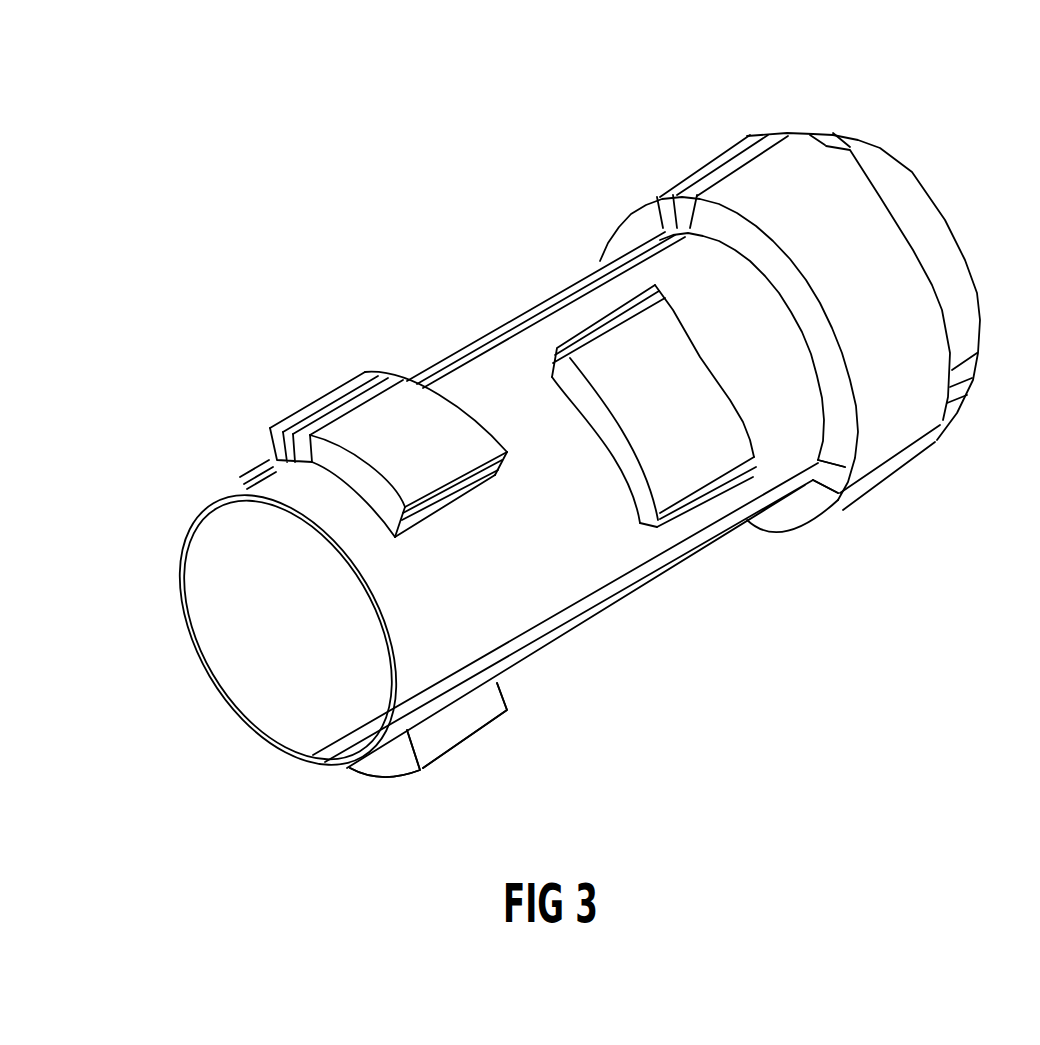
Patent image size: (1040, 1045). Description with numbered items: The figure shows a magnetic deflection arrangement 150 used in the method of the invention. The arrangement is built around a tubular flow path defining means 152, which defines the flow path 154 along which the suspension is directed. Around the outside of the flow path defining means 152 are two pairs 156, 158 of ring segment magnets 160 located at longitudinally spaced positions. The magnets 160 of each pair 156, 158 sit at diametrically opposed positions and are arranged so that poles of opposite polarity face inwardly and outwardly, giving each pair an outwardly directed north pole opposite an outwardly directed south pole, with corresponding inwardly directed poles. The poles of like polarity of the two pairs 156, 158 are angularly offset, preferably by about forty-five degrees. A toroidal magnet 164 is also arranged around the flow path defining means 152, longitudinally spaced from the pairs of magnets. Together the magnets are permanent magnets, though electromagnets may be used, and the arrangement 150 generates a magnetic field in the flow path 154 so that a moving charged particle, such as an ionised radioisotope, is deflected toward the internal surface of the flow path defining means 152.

The magnetic deflection arrangement 150 is at (821, 518).
The flow path defining means 152 is at (217, 493).
The flow path 154 is at (275, 590).
The first pair of ring segment magnets 156 is at (320, 390).
The second pair of ring segment magnets 158 is at (597, 307).
The ring segment magnets 160 is at (333, 432).
The toroidal magnet 164 is at (783, 170).